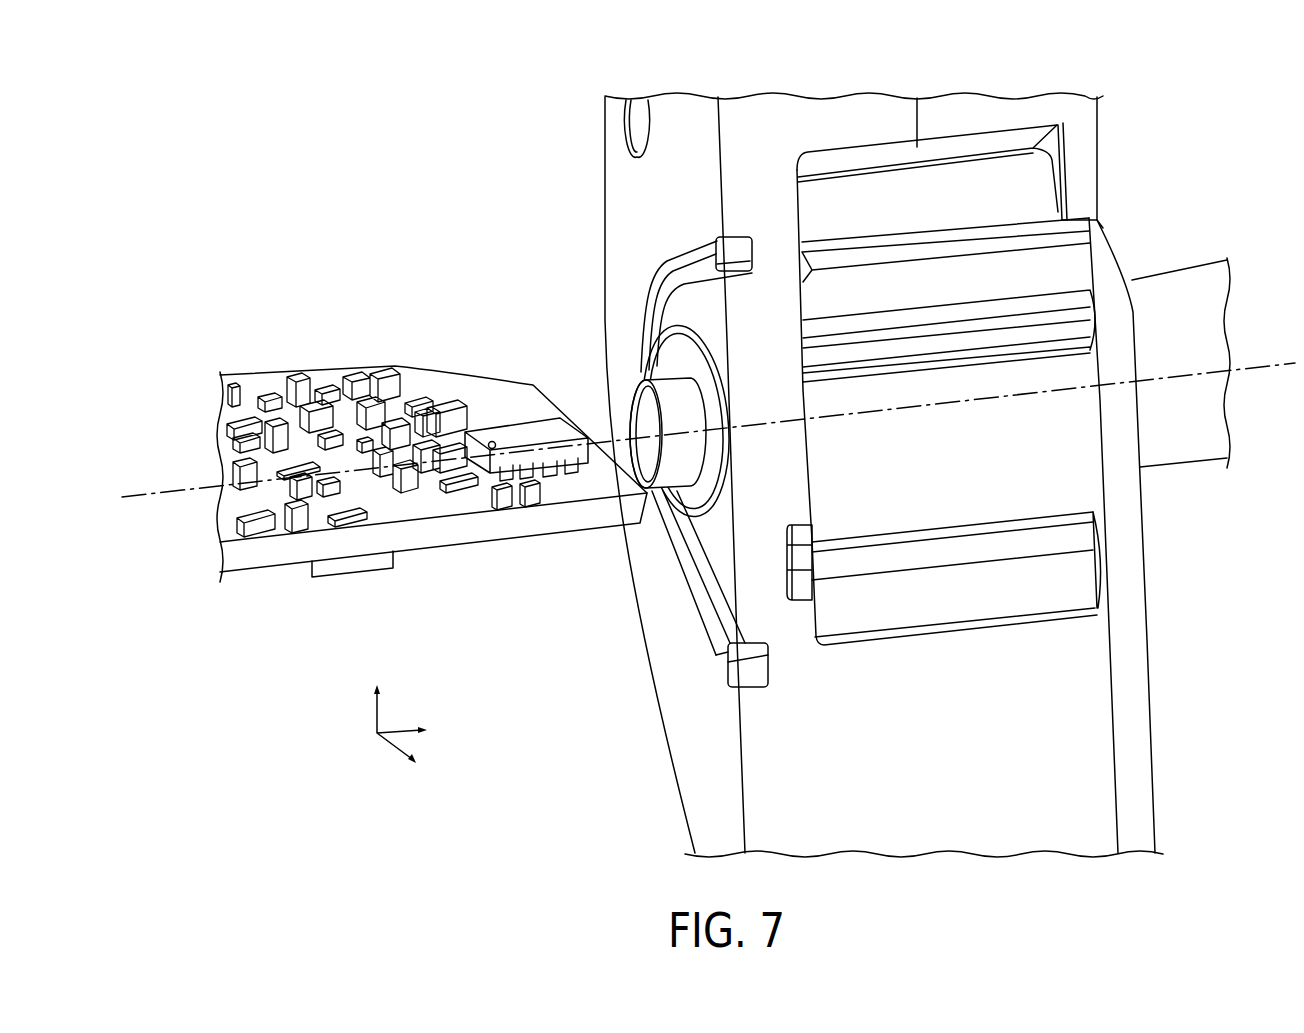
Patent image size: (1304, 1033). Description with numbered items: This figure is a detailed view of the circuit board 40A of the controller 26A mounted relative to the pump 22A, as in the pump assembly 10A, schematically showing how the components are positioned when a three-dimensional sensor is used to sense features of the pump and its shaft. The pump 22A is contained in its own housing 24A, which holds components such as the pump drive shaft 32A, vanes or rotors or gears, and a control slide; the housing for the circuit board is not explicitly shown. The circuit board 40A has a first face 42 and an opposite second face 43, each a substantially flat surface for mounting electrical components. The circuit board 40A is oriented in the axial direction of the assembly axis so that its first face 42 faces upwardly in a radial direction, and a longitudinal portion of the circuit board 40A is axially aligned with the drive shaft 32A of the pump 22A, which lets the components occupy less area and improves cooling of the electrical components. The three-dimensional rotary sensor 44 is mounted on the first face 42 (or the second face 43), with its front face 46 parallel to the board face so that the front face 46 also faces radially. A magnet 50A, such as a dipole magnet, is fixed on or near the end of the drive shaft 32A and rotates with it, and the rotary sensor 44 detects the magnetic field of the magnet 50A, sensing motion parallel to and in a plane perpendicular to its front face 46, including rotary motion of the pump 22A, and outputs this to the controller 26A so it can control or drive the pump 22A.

The pump assembly 10A is at (279, 156).
The pump 22A is at (959, 124).
The housing 24A is at (676, 86).
The controller 26A is at (432, 444).
The drive shaft 32A is at (718, 500).
The circuit board 40A is at (288, 553).
The first face 42 is at (272, 385).
The second face 43 is at (251, 578).
The 3D rotary sensor 44 is at (490, 441).
The front face 46 is at (519, 420).
The magnet 50A is at (678, 466).